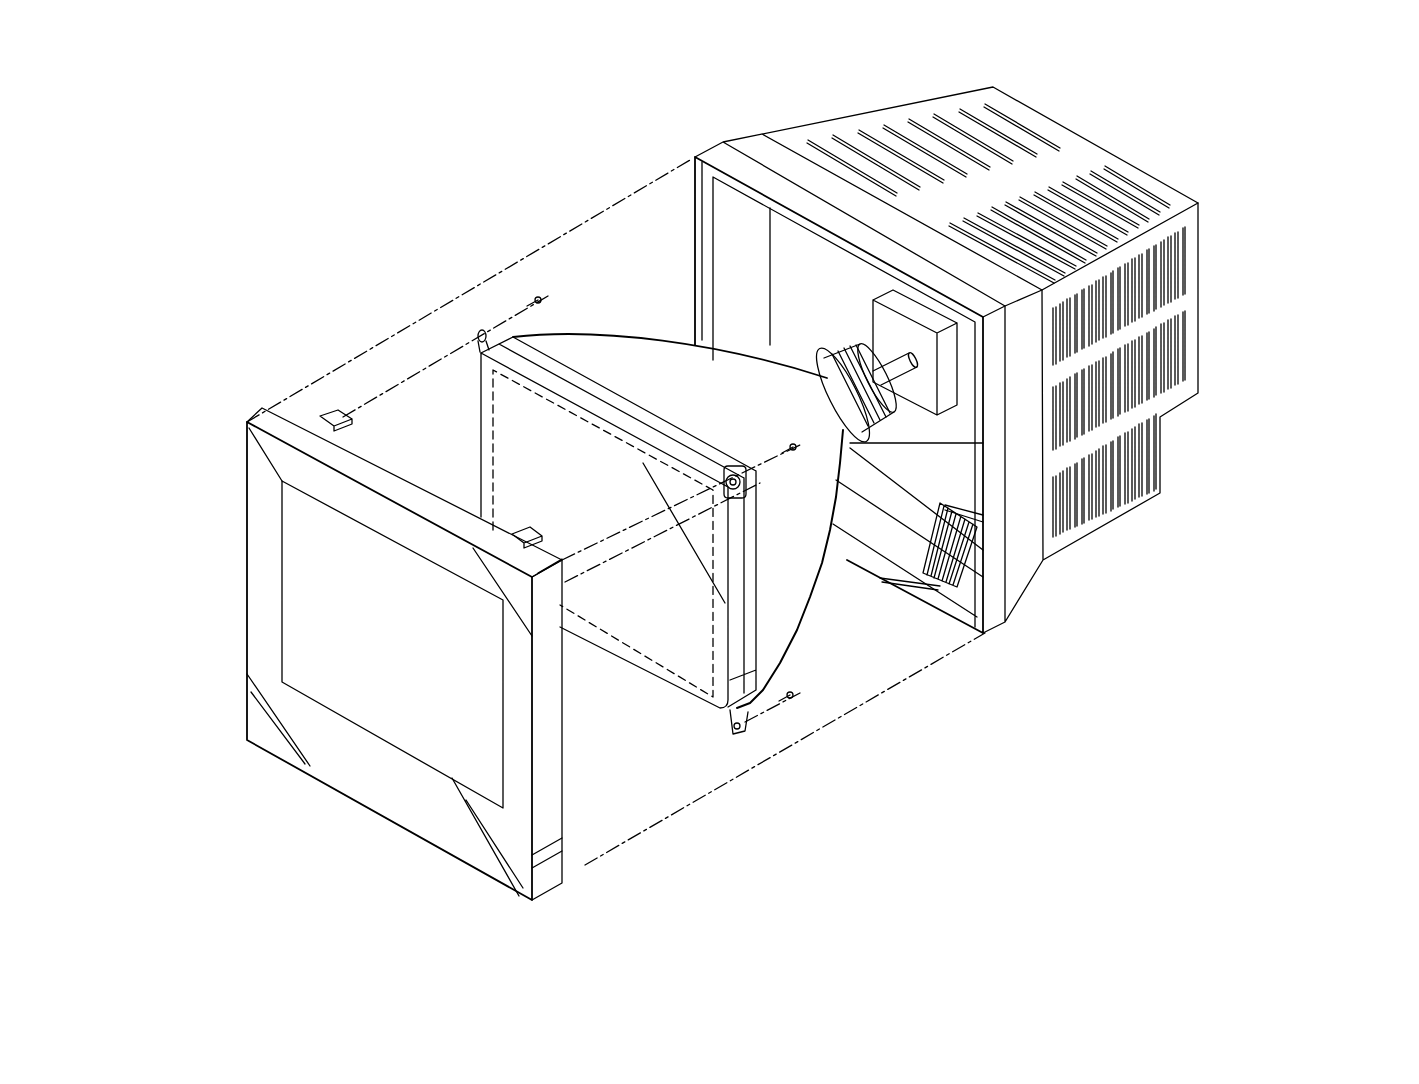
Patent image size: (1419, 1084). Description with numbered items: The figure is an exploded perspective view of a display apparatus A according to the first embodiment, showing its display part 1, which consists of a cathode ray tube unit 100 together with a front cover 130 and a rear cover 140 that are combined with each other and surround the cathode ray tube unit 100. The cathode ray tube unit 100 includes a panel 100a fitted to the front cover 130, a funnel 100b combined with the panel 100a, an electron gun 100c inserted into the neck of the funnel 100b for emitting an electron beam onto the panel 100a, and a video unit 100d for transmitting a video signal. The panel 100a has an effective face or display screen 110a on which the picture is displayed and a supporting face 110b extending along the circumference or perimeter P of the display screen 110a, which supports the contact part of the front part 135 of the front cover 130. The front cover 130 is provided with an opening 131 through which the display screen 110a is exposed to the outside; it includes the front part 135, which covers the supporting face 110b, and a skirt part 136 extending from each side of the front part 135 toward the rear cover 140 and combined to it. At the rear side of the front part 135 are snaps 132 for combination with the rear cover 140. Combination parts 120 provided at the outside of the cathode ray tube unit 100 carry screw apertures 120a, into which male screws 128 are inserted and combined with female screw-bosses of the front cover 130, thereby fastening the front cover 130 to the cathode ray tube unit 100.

The display part 1 is at (748, 522).
The cathode ray tube unit 100 is at (688, 540).
The panel 100a is at (688, 582).
The funnel 100b is at (917, 745).
The electron gun 100c is at (873, 352).
The video unit 100d is at (878, 300).
The effective face or display screen 110a is at (634, 657).
The supporting face 110b is at (687, 697).
The combination part 120 is at (452, 240).
The screw aperture 120a is at (540, 489).
The male screw 128 is at (518, 200).
The front cover 130 is at (351, 603).
The opening 131 is at (368, 526).
The snap 132 is at (578, 500).
The front part 135 is at (253, 485).
The skirt part 136 is at (250, 422).
The rear cover 140 is at (1205, 318).
The display apparatus A is at (193, 160).
The circumference or perimeter P is at (680, 848).